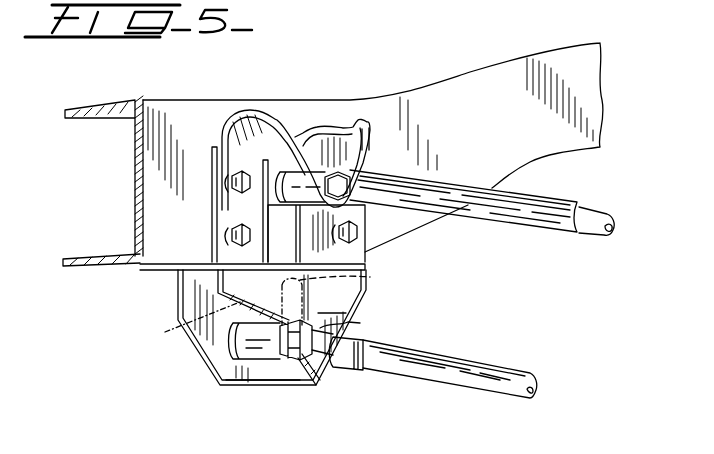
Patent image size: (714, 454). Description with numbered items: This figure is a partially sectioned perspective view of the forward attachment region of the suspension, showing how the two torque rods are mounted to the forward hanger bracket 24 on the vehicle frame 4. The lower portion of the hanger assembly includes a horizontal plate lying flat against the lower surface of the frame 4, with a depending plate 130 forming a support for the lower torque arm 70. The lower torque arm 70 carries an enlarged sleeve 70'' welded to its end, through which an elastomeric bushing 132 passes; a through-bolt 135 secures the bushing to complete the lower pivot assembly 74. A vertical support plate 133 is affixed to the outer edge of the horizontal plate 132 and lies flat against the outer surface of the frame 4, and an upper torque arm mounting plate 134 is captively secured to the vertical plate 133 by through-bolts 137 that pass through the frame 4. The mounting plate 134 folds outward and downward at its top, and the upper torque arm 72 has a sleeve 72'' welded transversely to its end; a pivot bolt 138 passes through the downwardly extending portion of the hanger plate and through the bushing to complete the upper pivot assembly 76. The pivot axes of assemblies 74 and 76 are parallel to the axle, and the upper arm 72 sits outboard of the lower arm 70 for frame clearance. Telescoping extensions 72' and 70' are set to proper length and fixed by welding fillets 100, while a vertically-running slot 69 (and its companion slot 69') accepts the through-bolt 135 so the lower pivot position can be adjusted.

The frame 4 is at (203, 100).
The forward hanger bracket 24 is at (332, 302).
The slot 69 is at (341, 293).
The bolt 69' is at (186, 321).
The lower torque arm 70 is at (450, 359).
The telescoping torque arm extension 70' is at (329, 378).
The enlarged sleeve 70'' is at (215, 353).
The upper torque arm 72 is at (482, 214).
The telescoping torque arm extension 72' is at (601, 250).
The sleeve 72'' is at (281, 173).
The pivot assembly 74 is at (258, 378).
The pivot assembly 76 is at (303, 216).
The welding fillets 100 is at (357, 373).
The depending plate 130 is at (177, 293).
The elastomeric bushing 132 is at (170, 272).
The vertical support plate 133 is at (212, 228).
The upper torque arm mounting plate 134 is at (223, 126).
The through-bolt 135 is at (348, 322).
The through-bolts 137 is at (232, 187).
The pivot bolt 138 is at (369, 152).